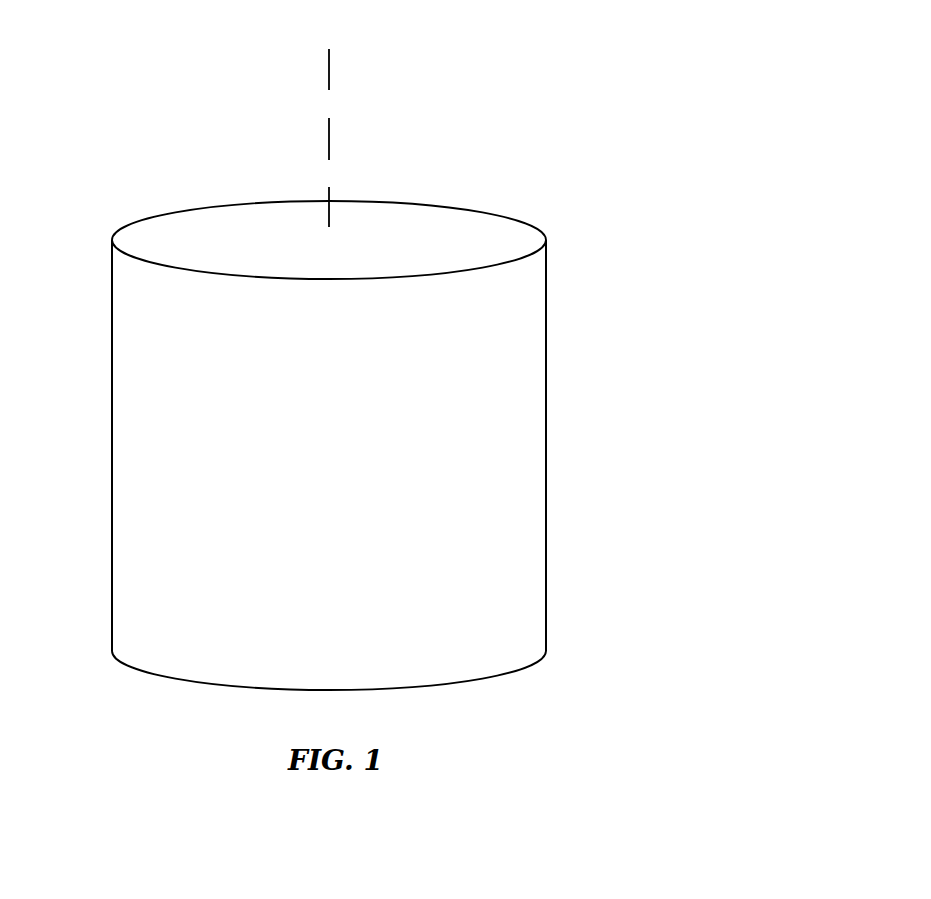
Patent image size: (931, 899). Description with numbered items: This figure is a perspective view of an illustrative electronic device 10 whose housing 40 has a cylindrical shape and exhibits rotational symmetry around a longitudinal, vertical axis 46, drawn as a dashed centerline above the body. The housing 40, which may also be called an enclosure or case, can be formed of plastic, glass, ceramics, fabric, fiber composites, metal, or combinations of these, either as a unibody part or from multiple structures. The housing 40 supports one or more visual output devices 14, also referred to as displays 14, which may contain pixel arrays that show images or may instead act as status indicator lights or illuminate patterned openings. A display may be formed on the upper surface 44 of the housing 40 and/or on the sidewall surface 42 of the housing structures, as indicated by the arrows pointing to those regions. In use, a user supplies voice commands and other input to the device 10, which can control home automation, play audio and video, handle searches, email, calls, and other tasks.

The electronic device 10 is at (346, 356).
The visual output device 14 is at (163, 232).
The housing 40 is at (378, 445).
The sidewall surface 42 is at (527, 425).
The upper surface 44 is at (518, 235).
The longitudinal axis 46 is at (330, 73).